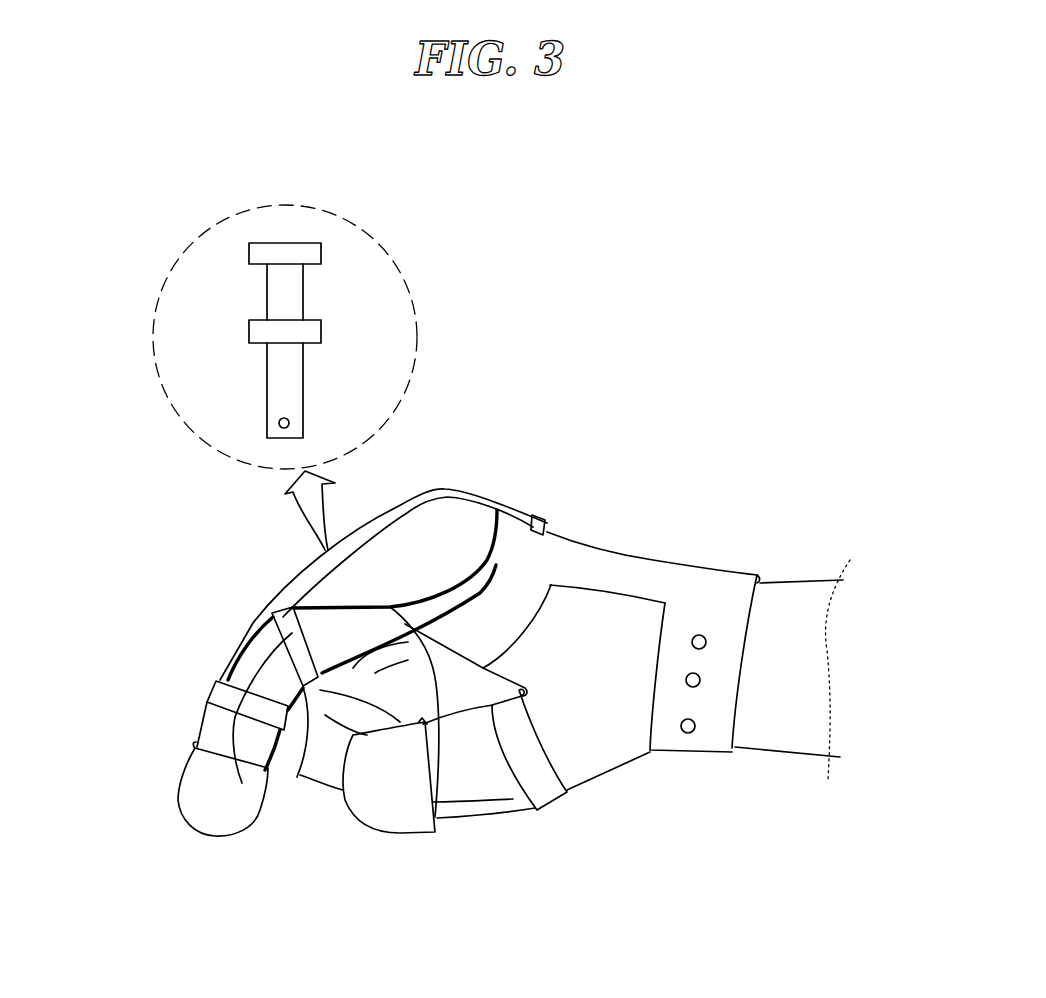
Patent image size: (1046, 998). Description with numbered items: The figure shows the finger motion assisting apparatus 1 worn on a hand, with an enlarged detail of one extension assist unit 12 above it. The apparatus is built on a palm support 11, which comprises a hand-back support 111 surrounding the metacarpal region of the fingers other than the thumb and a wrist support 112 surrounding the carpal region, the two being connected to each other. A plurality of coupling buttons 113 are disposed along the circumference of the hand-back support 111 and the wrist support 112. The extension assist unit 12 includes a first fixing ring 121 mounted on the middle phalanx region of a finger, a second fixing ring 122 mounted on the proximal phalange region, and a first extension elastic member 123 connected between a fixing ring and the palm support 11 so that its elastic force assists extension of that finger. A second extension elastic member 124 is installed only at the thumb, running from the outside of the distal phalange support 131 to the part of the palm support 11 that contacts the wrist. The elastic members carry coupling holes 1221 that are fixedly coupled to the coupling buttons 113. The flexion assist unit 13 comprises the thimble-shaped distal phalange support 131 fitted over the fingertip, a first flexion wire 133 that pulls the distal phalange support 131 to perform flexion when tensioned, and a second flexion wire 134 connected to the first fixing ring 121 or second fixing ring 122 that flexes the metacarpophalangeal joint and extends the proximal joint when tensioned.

The finger motion assisting apparatus 1 is at (556, 380).
The palm support 11 is at (653, 550).
The hand-back support 111 is at (507, 603).
The wrist support 112 is at (713, 587).
The coupling button 113 is at (539, 515).
The extension assist unit 12 is at (245, 330).
The first fixing ring 121 is at (321, 250).
The second fixing ring 122 is at (321, 328).
The coupling hole 1221 is at (290, 421).
The first extension elastic member 123 is at (298, 292).
The second extension elastic member 124 is at (515, 803).
The flexion assist unit 13 is at (191, 836).
The distal phalange support 131 is at (200, 785).
The first flexion wire 133 is at (297, 777).
The second flexion wire 134 is at (435, 817).